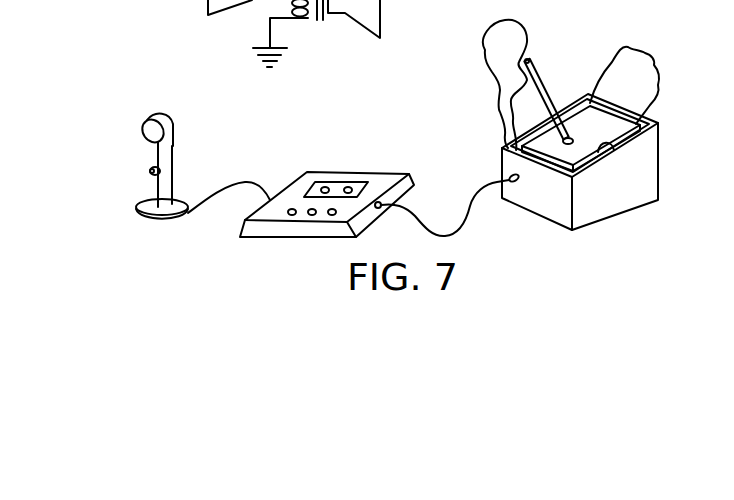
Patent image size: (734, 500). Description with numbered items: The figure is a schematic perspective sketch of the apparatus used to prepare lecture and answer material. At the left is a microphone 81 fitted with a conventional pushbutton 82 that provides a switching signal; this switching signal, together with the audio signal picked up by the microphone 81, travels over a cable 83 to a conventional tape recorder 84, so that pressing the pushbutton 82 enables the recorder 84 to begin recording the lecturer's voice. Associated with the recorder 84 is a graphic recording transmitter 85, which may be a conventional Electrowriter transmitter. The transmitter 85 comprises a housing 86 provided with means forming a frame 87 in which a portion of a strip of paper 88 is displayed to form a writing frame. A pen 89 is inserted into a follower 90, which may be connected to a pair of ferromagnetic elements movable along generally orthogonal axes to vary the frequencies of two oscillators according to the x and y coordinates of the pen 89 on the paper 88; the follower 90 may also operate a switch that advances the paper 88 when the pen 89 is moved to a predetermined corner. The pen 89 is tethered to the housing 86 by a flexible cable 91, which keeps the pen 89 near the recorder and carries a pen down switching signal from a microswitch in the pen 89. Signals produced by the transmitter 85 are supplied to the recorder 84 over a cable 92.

The microphone 81 is at (182, 132).
The pushbutton 82 is at (150, 173).
The cable 83 is at (238, 186).
The tape recorder 84 is at (349, 160).
The graphic recording transmitter 85 is at (576, 128).
The housing 86 is at (637, 166).
The frame 87 is at (612, 138).
The strip of paper 88 is at (627, 69).
The pen 89 is at (543, 77).
The follower 90 is at (540, 145).
The flexible cable 91 is at (488, 67).
The cable 92 is at (452, 237).